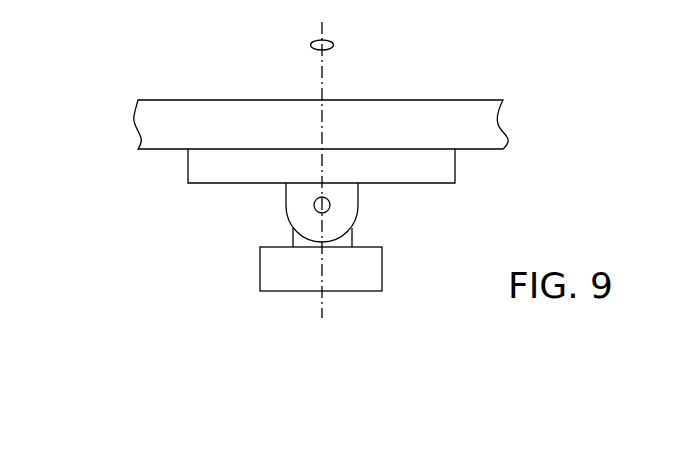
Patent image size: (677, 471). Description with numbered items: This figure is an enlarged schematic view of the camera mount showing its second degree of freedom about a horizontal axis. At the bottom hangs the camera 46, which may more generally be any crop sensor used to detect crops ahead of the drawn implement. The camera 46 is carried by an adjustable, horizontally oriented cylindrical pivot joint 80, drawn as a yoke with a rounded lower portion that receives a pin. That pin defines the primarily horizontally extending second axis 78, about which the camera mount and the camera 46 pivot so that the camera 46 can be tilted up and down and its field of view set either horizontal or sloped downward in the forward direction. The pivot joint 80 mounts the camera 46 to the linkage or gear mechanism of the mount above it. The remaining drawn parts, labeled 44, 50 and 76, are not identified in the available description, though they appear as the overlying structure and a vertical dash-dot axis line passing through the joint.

The panel 44 is at (445, 120).
The pivot axis 50 is at (333, 44).
The mounting bracket 76 is at (417, 162).
The second axis 78 is at (330, 209).
The cylindrical pivot joint 80 is at (288, 204).
The camera 46 is at (287, 268).